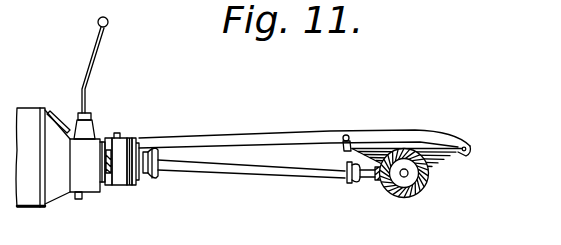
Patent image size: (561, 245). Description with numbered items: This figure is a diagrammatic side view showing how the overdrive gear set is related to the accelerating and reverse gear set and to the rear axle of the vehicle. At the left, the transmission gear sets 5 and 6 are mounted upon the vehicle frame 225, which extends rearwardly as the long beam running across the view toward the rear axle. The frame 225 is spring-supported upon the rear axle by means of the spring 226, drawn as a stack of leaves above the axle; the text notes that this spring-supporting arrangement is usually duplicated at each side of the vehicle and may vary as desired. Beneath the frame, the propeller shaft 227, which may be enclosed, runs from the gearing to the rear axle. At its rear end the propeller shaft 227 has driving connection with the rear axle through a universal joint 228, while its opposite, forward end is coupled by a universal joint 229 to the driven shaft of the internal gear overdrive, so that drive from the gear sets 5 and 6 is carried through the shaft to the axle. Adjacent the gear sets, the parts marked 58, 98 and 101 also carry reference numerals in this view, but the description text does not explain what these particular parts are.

The transmission gear set 5 is at (88, 191).
The transmission gear set 6 is at (120, 186).
The bearing cover 58 is at (133, 187).
The plug 98 is at (116, 137).
The flange 101 is at (136, 138).
The frame 225 is at (234, 134).
The spring 226 is at (437, 157).
The propeller shaft 227 is at (257, 168).
The universal joint 228 is at (347, 183).
The universal joint 229 is at (153, 173).